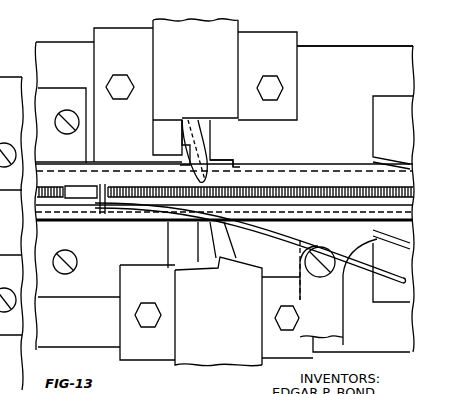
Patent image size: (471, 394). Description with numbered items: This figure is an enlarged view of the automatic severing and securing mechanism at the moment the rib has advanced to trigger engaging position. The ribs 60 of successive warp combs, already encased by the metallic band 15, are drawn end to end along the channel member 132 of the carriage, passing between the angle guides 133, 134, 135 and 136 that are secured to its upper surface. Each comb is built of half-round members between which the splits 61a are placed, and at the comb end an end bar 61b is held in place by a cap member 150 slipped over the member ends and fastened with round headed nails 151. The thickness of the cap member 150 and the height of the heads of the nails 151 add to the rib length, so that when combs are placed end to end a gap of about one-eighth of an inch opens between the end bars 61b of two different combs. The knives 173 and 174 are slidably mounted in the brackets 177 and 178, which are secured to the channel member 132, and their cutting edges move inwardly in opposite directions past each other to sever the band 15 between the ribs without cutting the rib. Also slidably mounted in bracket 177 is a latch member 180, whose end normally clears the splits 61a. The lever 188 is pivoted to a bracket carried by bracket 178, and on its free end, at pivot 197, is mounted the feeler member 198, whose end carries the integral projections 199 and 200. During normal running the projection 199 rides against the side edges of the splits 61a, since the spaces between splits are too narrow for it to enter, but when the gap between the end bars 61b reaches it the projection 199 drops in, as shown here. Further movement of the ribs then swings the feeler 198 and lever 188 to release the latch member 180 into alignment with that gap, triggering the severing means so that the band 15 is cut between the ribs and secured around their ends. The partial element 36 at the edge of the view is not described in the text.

The band 15 is at (224, 155).
The adjacent unit 36 is at (11, 233).
The ribs 60 is at (362, 172).
The splits 61a is at (345, 190).
The end bar 61b is at (101, 184).
The channel member 132 is at (351, 50).
The angle guide 133 is at (69, 95).
The angle guide 134 is at (82, 298).
The angle guide 135 is at (398, 108).
The angle guide 136 is at (380, 303).
The cap member 150 is at (109, 141).
The round headed nails 151 is at (142, 137).
The knife 173 is at (183, 245).
The knife 174 is at (222, 161).
The bracket 177 is at (195, 69).
The bracket 178 is at (218, 311).
The latch member 180 is at (192, 124).
The lever 188 is at (302, 294).
The pivot 197 is at (305, 260).
The feeler member 198 is at (272, 236).
The projection 199 is at (85, 192).
The projection 200 is at (72, 224).